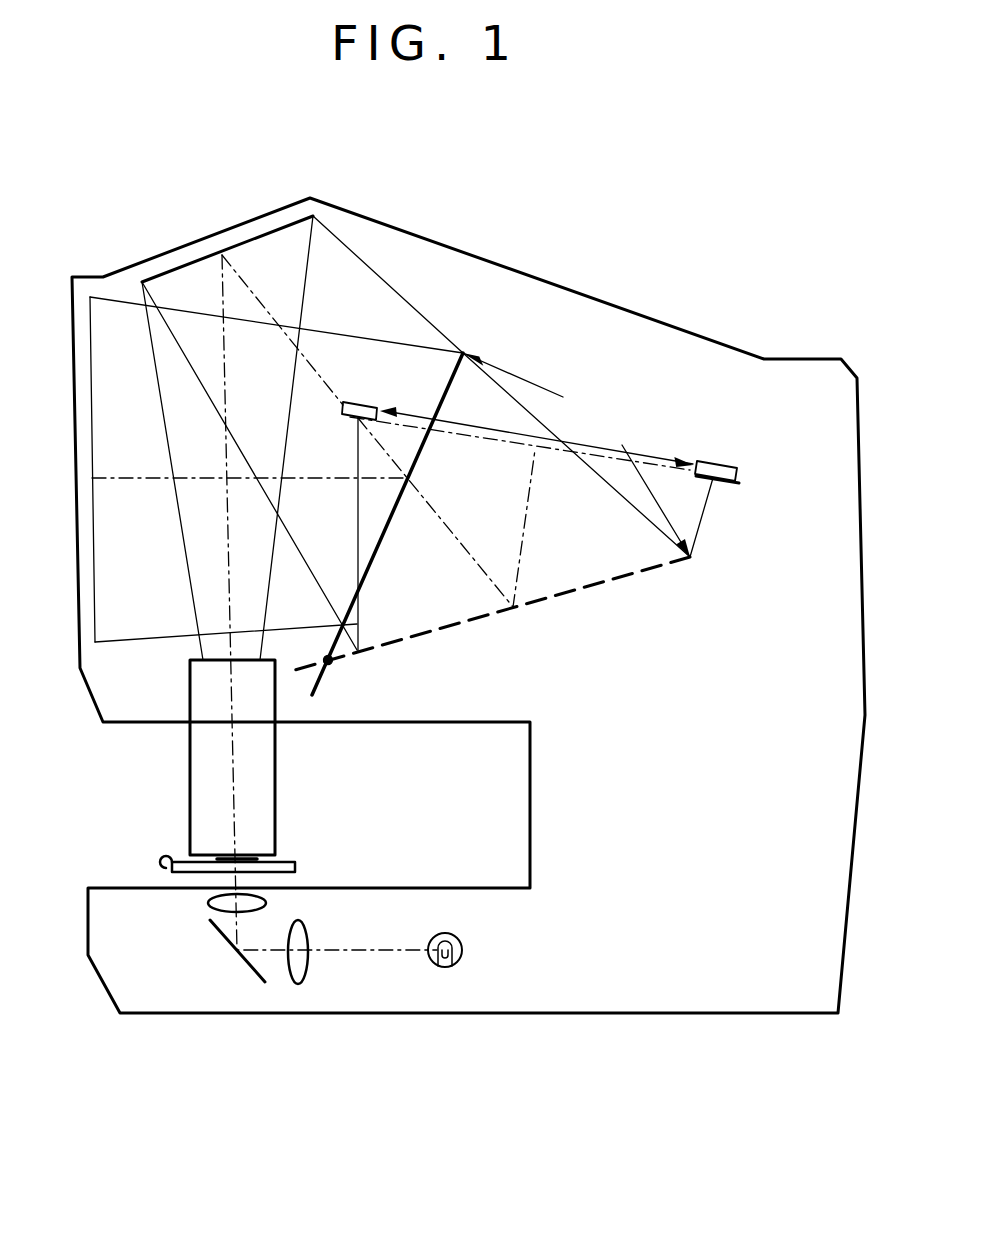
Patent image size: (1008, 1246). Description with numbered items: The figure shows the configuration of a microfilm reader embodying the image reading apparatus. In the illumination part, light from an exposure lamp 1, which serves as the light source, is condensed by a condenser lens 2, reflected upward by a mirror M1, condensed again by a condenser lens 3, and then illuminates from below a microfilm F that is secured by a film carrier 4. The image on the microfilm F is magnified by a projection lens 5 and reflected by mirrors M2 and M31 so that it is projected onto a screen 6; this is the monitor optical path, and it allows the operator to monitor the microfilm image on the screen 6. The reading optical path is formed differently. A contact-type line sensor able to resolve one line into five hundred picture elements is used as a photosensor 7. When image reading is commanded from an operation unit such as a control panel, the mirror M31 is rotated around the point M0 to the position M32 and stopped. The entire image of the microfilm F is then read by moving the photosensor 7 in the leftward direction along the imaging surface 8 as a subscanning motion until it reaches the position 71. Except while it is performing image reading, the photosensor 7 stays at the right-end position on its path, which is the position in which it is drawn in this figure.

The exposure lamp 1 is at (432, 962).
The condenser lens 2 is at (307, 975).
The mirror M1 is at (255, 972).
The condenser lens 3 is at (213, 897).
The film carrier 4 is at (298, 868).
The microfilm F is at (247, 857).
The projection lens 5 is at (277, 785).
The mirror M2 is at (258, 237).
The mirror M31 is at (453, 380).
The mirror position M32 is at (570, 593).
The point M0 is at (333, 664).
The screen 6 is at (93, 630).
The photosensor 7 is at (718, 462).
The position 71 is at (365, 403).
The imaging surface 8 is at (590, 450).